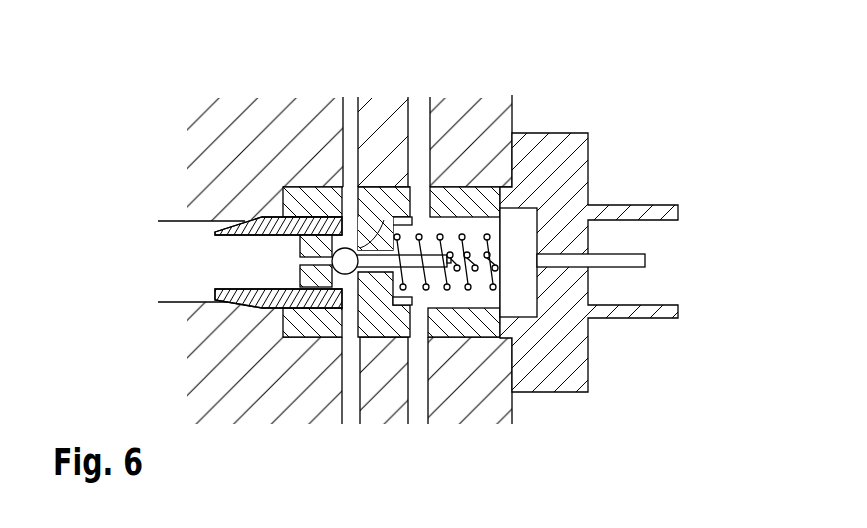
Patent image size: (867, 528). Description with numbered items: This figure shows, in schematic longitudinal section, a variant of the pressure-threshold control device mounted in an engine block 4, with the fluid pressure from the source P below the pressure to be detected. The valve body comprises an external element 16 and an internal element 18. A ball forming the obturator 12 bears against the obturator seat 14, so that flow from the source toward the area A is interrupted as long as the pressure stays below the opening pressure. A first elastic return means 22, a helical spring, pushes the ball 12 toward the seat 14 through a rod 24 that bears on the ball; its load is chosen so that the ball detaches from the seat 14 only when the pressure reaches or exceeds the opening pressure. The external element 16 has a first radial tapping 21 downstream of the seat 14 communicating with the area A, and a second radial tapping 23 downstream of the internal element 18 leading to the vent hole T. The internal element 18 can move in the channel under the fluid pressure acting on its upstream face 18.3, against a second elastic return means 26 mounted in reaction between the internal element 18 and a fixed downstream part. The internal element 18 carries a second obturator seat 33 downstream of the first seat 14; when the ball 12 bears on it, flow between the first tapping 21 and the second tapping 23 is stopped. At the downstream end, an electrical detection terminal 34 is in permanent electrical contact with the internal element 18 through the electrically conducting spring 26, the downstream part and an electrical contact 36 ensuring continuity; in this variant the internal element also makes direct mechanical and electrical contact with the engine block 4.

The engine block 4 is at (213, 163).
The obturator 12 is at (345, 262).
The obturator seat 14 is at (300, 214).
The external element 16 is at (308, 322).
The internal element 18 is at (265, 322).
The upstream face 18.3 is at (333, 222).
The first radial tapping 21 is at (343, 199).
The first elastic return means 22 is at (494, 285).
The second radial tapping 23 is at (422, 202).
The rod 24 is at (377, 262).
The second elastic return means 26 is at (447, 288).
The second obturator seat 33 is at (363, 252).
The electrical detection terminal 34 is at (638, 263).
The electrical contact 36 is at (522, 236).